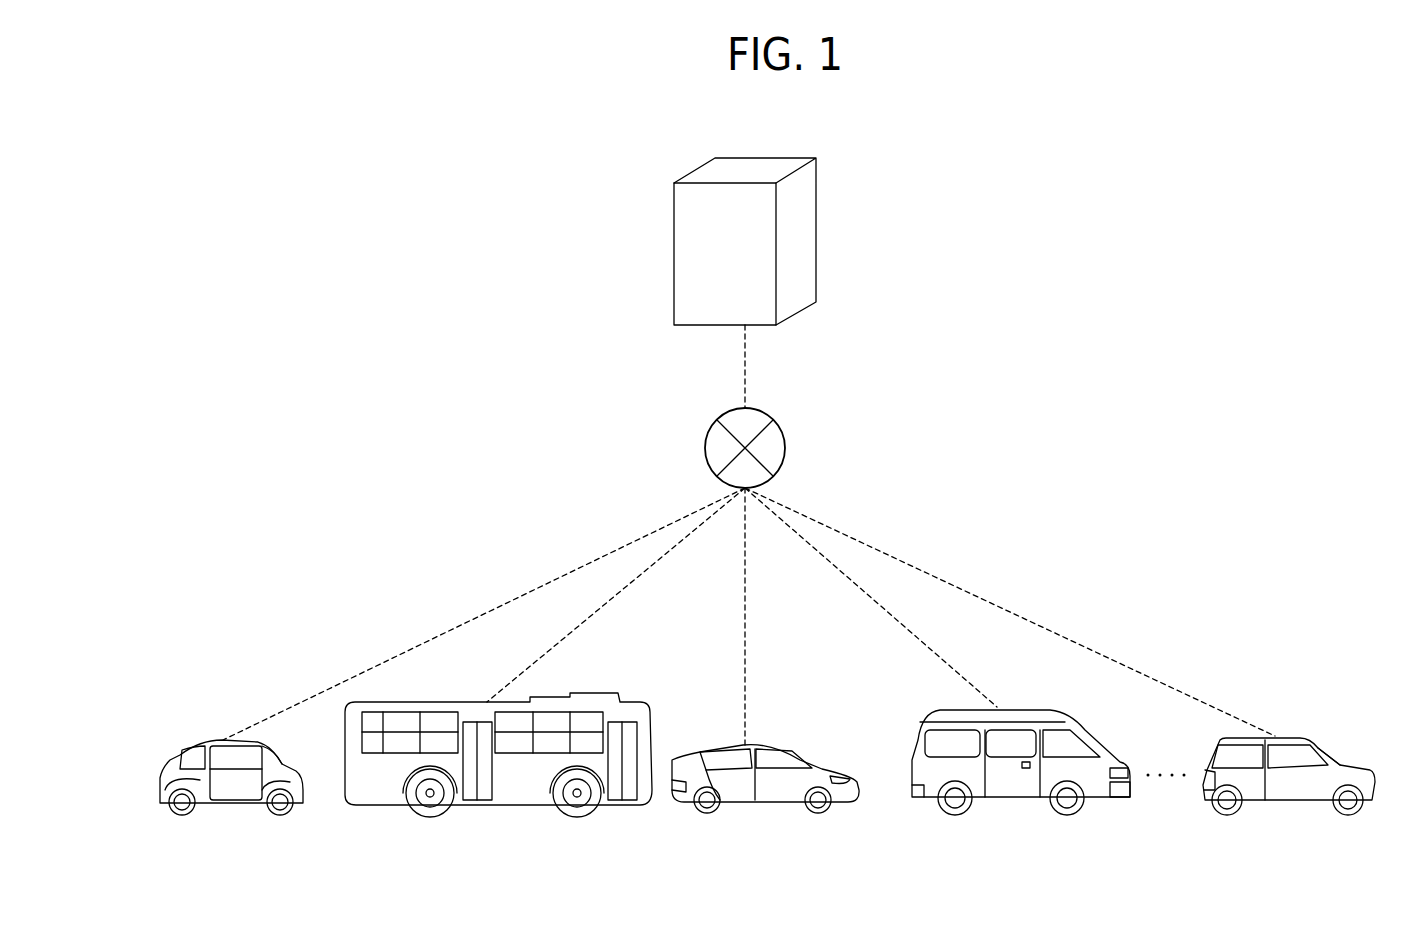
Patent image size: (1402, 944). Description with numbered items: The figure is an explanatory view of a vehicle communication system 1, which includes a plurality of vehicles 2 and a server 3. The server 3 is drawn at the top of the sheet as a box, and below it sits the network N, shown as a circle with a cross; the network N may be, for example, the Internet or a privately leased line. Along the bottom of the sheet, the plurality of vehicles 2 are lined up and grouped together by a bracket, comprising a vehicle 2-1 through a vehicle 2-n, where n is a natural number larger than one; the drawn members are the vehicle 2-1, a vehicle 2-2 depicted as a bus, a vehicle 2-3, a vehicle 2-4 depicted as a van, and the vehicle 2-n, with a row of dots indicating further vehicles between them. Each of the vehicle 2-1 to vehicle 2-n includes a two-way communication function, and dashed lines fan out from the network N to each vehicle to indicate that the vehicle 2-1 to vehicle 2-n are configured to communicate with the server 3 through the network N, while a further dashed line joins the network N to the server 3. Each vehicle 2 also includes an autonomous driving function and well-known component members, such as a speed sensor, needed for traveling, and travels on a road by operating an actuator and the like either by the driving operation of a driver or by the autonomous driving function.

The vehicle communication system 1 is at (1128, 188).
The vehicles 2 is at (1385, 865).
The vehicle 2-1 is at (232, 805).
The vehicle 2-2 is at (520, 806).
The vehicle 2-3 is at (770, 804).
The vehicle 2-4 is at (1010, 799).
The vehicle 2-n is at (1288, 802).
The server 3 is at (816, 205).
The network N is at (785, 447).